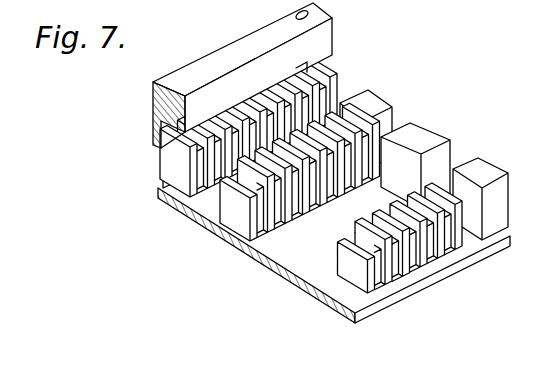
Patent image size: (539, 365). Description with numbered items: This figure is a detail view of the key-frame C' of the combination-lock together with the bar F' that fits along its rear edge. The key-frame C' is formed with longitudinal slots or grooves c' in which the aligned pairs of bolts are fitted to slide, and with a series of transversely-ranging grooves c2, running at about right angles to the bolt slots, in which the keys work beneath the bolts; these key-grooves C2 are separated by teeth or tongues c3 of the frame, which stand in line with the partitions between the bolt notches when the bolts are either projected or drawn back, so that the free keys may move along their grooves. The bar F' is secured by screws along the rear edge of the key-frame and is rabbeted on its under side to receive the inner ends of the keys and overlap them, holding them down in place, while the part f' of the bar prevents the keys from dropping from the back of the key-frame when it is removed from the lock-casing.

The bar F' is at (222, 81).
The part of bar f' is at (148, 121).
The key-frame C' is at (334, 190).
The longitudinal slots or grooves c' is at (423, 157).
The transversely-ranging grooves c2 is at (408, 236).
The teeth or tongues c3 is at (341, 219).
The key-grooves C2 is at (389, 290).